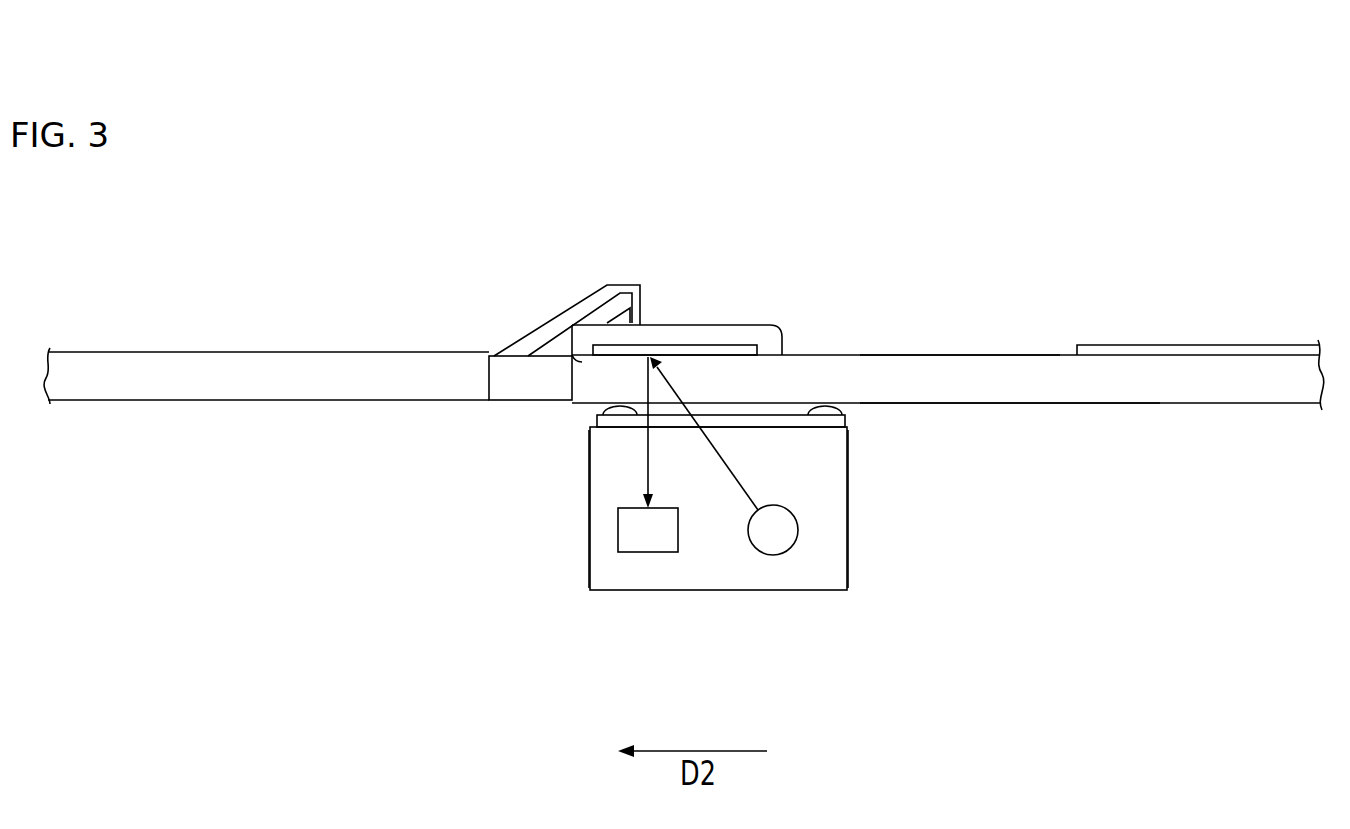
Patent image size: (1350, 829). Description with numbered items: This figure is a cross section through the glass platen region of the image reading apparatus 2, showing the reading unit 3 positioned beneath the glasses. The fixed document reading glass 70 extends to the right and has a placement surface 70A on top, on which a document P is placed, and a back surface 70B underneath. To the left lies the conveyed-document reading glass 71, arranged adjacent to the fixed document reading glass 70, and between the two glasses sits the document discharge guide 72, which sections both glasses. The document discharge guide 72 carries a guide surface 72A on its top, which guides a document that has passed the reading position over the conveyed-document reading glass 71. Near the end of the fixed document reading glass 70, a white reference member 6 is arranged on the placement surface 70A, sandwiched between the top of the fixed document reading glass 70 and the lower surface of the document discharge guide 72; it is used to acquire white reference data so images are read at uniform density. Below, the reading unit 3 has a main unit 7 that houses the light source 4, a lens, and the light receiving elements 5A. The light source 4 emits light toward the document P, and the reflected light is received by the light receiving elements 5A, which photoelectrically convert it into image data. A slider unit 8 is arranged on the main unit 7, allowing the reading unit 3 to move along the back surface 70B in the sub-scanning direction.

The image reading apparatus 2 is at (943, 556).
The reading unit 3 is at (560, 581).
The light source 4 is at (797, 527).
The light receiving element 5A is at (648, 552).
The white reference member 6 is at (677, 345).
The main unit 7 is at (847, 476).
The slider unit 8 is at (845, 423).
The fixed document reading glass 70 is at (1263, 403).
The placement surface 70A is at (990, 356).
The back surface 70B is at (1078, 403).
The conveyed-document reading glass 71 is at (240, 400).
The document discharge guide 72 is at (527, 400).
The guide surface 72A is at (568, 323).
The document P is at (1228, 353).